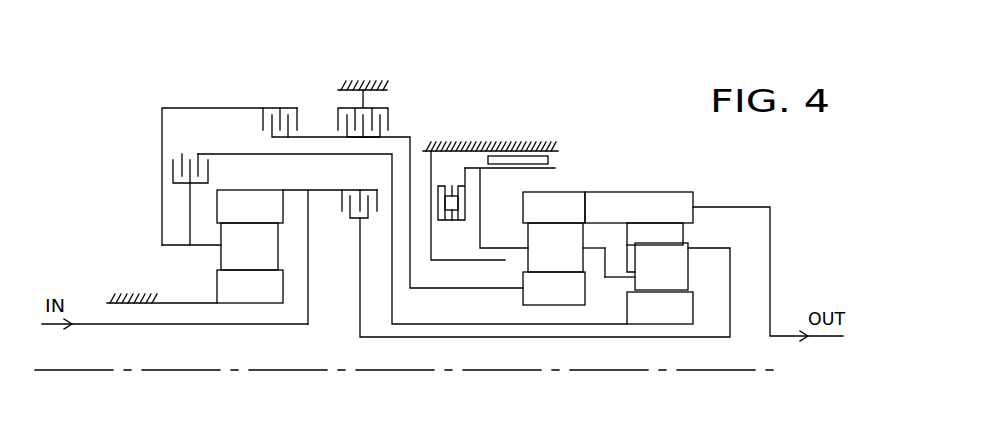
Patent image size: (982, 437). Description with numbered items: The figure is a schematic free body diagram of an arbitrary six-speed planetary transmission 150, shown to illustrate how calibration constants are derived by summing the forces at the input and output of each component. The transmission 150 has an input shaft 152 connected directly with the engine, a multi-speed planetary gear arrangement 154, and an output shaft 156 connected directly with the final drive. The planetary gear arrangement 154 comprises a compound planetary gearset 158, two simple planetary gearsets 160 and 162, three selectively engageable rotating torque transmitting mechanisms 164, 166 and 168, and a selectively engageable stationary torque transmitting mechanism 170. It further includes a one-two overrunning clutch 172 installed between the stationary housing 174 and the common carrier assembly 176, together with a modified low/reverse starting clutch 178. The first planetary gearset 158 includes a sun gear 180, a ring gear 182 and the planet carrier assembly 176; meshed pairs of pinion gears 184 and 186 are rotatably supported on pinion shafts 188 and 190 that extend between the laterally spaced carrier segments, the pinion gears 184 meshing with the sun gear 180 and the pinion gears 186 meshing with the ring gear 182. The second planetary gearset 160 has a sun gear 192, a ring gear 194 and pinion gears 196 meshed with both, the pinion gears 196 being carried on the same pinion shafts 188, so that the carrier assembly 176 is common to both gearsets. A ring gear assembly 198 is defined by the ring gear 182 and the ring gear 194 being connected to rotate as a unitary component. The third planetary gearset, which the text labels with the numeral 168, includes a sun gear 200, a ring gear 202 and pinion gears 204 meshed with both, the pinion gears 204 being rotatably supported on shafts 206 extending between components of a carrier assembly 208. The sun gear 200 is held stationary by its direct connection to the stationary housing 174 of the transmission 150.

The six-speed planetary transmission 150 is at (640, 95).
The input shaft 152 is at (162, 325).
The multi-speed planetary gear arrangement 154 is at (495, 95).
The output shaft 156 is at (785, 333).
The compound planetary gearset 158 is at (553, 310).
The second planetary gearset 160 is at (524, 297).
The simple planetary gearset 162 is at (287, 286).
The rotating torque transmitting mechanism 164 is at (192, 147).
The rotating torque transmitting mechanism 166 is at (278, 102).
The rotating torque transmitting mechanism 168 is at (340, 222).
The stationary torque transmitting mechanism 170 is at (392, 98).
The 1-2 overrunning clutch 172 is at (447, 174).
The stationary housing 174 is at (197, 302).
The common carrier assembly 176 is at (610, 285).
The low/reverse starting clutch 178 is at (568, 148).
The sun gear 180 is at (702, 302).
The ring gear 182 is at (639, 207).
The pinion gears 184 is at (661, 266).
The pinion gears 186 is at (683, 233).
The pinion shafts 188 is at (620, 277).
The pinion shafts 190 is at (592, 247).
The sun gear 192 is at (510, 303).
The ring gear 194 is at (554, 207).
The pinion gears 196 is at (555, 247).
The ring gear assembly 198 is at (557, 272).
The sun gear 200 is at (250, 286).
The ring gear 202 is at (250, 206).
The pinion gears 204 is at (249, 246).
The shafts 206 is at (205, 245).
The carrier assembly 208 is at (205, 263).